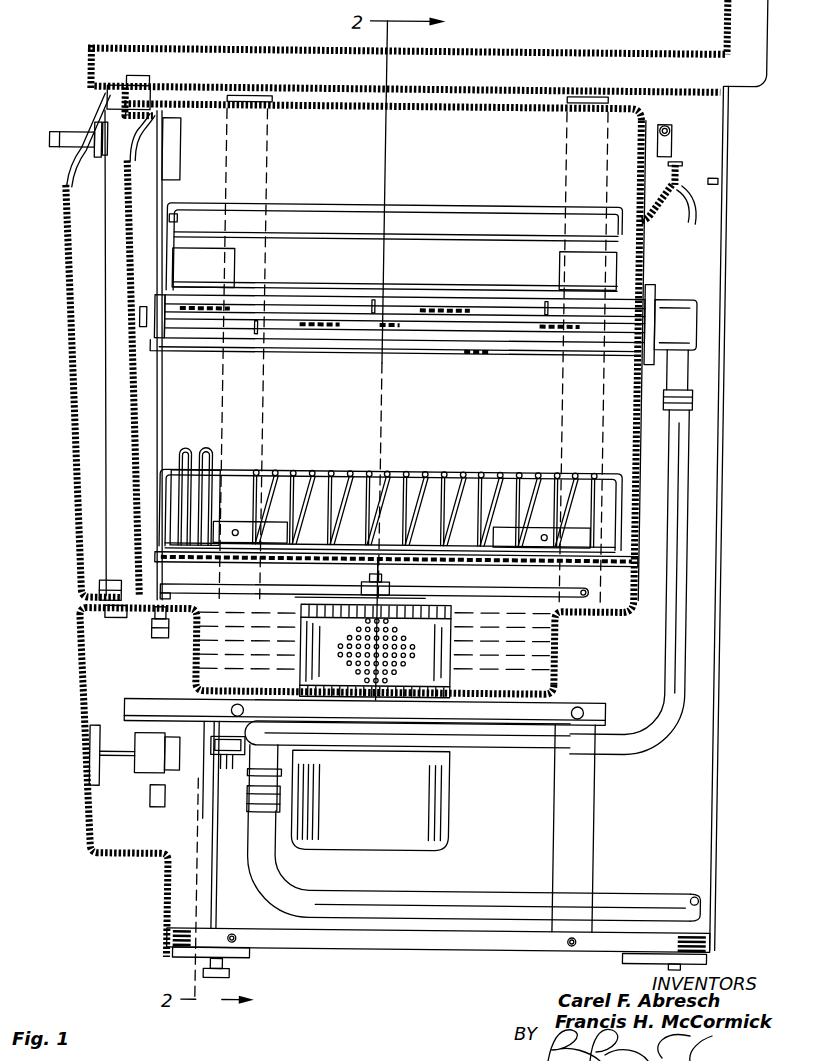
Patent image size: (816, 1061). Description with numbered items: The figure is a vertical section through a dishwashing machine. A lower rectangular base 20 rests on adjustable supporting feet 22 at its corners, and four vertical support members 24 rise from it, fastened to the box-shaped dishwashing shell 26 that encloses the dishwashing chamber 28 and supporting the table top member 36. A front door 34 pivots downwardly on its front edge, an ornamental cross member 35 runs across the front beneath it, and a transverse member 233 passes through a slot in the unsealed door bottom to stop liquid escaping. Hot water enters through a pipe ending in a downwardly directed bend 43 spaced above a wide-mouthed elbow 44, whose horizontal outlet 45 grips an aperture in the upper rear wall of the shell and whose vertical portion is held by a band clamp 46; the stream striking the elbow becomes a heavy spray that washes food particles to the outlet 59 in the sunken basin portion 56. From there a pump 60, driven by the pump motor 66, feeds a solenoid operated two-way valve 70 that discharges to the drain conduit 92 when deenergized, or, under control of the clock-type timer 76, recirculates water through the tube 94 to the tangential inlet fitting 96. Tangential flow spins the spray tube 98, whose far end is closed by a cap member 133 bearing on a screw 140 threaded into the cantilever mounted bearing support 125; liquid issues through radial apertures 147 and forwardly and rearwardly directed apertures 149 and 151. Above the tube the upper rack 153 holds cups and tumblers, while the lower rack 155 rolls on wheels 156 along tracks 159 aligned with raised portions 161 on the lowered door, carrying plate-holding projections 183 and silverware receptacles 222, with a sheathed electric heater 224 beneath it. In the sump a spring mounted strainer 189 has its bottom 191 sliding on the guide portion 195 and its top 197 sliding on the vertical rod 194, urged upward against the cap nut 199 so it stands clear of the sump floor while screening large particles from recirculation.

The rectangular base 20 is at (431, 943).
The adjustable supporting feet 22 is at (243, 976).
The vertical support members 24 is at (233, 882).
The dishwashing shell 26 is at (324, 113).
The dishwashing chamber 28 is at (370, 348).
The front door 34 is at (70, 495).
The ornamental cross member 35 is at (98, 705).
The table top member 36 is at (293, 46).
The 180° bend 43 is at (670, 137).
The wide-mouthed elbow 44 is at (682, 197).
The horizontal outlet 45 is at (633, 204).
The band clamp 46 is at (678, 169).
The sunken basin portion 56 is at (561, 662).
The outlet 59 is at (451, 709).
The pump 60 is at (441, 735).
The pump motor 66 is at (390, 828).
The solenoid operated two-way valve 70 is at (254, 755).
The clock-type timer 76 is at (143, 794).
The drain conduit 92 is at (651, 898).
The tube 94 is at (651, 733).
The tangential inlet fitting 96 is at (701, 340).
The spray tube 98 is at (434, 328).
The cantilever mounted bearing support 125 is at (475, 356).
The cap member 133 is at (171, 342).
The screw 140 is at (140, 320).
The radially directed nozzles or jet apertures 147 is at (265, 331).
The forwardly directed nozzles or jet apertures 149 is at (399, 335).
The rearwardly directed nozzles or jet apertures 151 is at (548, 303).
The upper rack 153 is at (489, 204).
The lower rack 155 is at (421, 470).
The wheels 156 is at (276, 518).
The tracks 159 is at (644, 565).
The raised portions 161 is at (148, 182).
The upwardly extending projections 183 is at (391, 468).
The spring mounted strainer 189 is at (457, 621).
The bottom of the strainer 191 is at (343, 700).
The vertical rod 194 is at (425, 595).
The guide portion 195 is at (547, 665).
The top of the strainer 197 is at (344, 609).
The cap nut 199 is at (397, 578).
The receptacles 222 is at (187, 449).
The electric heater 224 is at (591, 586).
The transverse member 233 is at (102, 604).